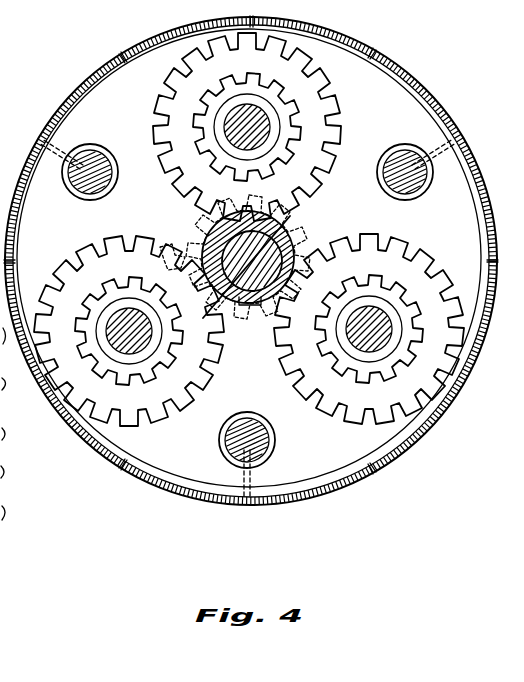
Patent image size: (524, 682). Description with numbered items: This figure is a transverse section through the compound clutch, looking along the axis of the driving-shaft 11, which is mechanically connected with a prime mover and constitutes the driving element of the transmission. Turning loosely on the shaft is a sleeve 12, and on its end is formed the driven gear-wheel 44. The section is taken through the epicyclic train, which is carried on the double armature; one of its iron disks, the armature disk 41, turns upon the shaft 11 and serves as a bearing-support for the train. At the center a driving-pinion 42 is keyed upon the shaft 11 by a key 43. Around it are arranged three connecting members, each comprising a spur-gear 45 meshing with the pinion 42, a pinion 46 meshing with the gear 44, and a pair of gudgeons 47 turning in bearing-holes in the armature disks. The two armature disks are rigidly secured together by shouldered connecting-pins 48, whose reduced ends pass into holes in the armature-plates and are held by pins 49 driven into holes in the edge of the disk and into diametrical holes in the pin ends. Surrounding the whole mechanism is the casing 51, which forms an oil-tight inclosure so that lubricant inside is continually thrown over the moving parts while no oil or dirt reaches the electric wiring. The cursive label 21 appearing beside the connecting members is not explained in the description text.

The driving-shaft 11 is at (211, 285).
The sleeve 12 is at (216, 231).
The planet gear 21 is at (338, 124).
The armature disk 41 is at (180, 443).
The driving-pinion 42 is at (247, 312).
The key 43 is at (251, 303).
The driven gear-wheel 44 is at (311, 223).
The spur-gear 45 is at (331, 103).
The pinion 46 is at (278, 111).
The gudgeons 47 is at (232, 139).
The shouldered connecting-pins 48 is at (114, 163).
The pins 49 is at (60, 160).
The casing 51 is at (404, 70).